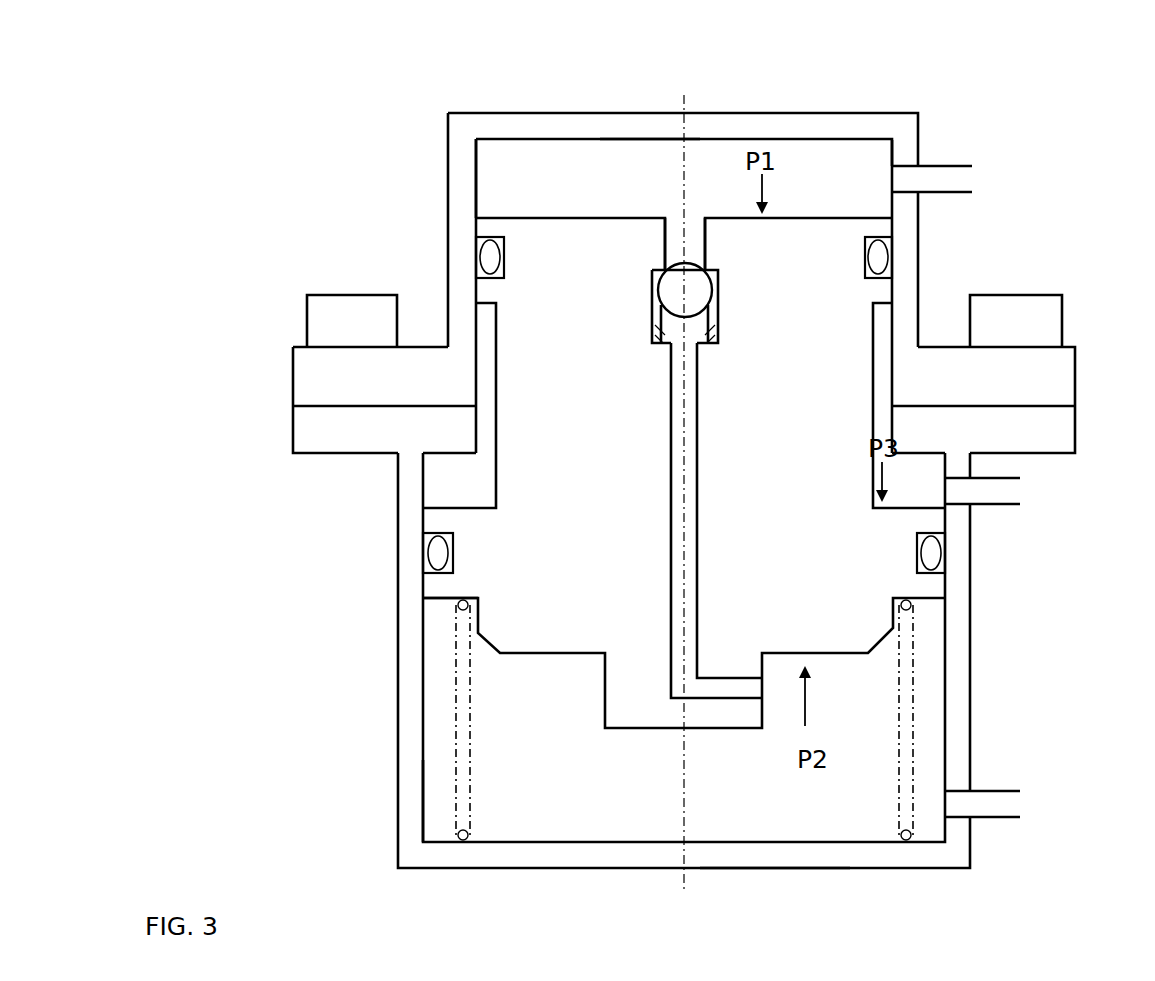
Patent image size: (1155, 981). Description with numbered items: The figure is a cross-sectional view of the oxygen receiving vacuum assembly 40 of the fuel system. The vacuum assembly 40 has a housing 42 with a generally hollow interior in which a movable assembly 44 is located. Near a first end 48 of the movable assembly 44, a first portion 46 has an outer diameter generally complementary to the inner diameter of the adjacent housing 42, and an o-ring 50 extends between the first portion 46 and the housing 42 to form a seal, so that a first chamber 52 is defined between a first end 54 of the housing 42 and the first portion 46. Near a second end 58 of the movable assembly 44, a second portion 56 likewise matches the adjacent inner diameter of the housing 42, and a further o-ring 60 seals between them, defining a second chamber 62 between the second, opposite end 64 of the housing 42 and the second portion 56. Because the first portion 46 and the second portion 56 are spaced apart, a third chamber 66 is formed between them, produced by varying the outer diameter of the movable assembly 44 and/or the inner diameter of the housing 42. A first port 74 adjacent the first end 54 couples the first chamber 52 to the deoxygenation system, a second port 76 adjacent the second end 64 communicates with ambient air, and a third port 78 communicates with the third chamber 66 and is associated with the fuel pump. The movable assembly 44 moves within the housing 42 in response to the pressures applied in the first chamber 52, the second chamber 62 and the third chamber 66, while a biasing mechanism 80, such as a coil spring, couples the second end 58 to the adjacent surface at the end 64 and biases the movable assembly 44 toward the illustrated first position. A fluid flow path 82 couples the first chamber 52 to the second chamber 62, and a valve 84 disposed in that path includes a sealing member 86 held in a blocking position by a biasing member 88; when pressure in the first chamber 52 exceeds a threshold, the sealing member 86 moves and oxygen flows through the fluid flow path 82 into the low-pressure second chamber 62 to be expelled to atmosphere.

The oxygen receiving vacuum assembly 40 is at (230, 152).
The housing 42 is at (776, 134).
The movable assembly 44 is at (520, 562).
The first portion 46 is at (545, 265).
The first end 48 is at (582, 215).
The o-ring 50 is at (883, 258).
The first chamber 52 is at (617, 185).
The first end 54 is at (848, 140).
The second portion 56 is at (882, 552).
The second end 58 is at (625, 730).
The o-ring 60 is at (433, 556).
The second chamber 62 is at (492, 763).
The second end 64 is at (765, 825).
The third chamber 66 is at (458, 478).
The first port 74 is at (937, 175).
The second port 76 is at (993, 805).
The third port 78 is at (987, 490).
The biasing mechanism 80 is at (907, 722).
The fluid flow path 82 is at (678, 453).
The valve 84 is at (745, 296).
The sealing member 86 is at (697, 290).
The biasing member 88 is at (662, 314).